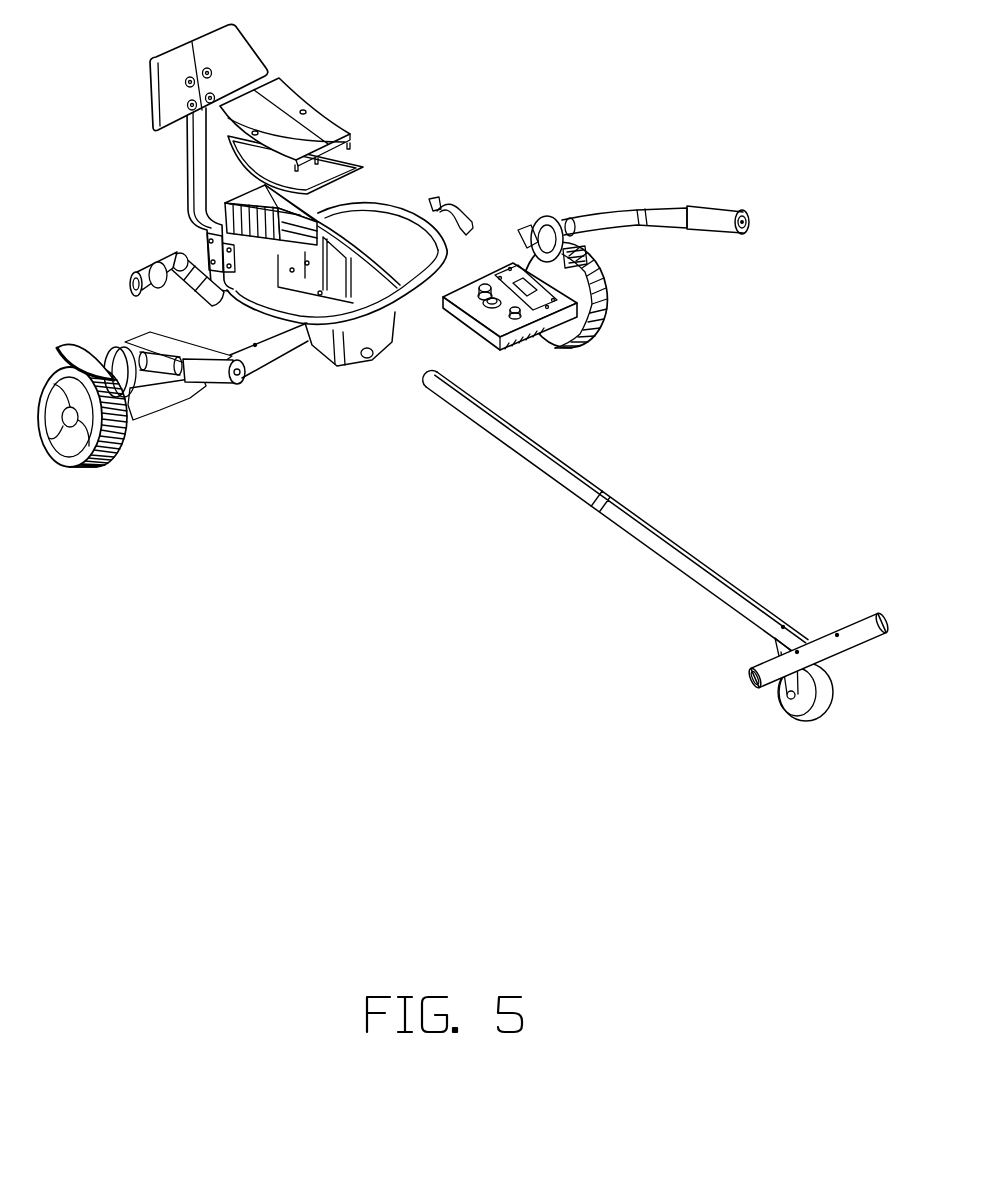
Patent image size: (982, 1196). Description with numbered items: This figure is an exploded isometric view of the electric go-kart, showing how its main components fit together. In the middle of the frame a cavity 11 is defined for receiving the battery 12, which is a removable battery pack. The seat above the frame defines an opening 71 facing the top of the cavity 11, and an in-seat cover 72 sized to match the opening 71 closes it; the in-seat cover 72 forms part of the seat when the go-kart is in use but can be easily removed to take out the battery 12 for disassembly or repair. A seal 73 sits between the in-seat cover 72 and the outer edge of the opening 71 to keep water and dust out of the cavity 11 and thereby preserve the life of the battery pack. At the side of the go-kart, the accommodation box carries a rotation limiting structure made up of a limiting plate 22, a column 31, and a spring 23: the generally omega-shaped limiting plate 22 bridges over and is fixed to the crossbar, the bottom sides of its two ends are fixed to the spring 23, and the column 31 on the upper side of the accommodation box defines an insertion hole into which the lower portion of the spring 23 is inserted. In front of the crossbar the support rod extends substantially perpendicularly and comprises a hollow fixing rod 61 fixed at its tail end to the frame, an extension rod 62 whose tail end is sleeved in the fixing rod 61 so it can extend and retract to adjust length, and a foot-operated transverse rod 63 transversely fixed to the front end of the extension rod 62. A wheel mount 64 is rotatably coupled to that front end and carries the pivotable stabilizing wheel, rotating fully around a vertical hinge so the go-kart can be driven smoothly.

The cavity 11 is at (365, 287).
The battery 12 is at (243, 232).
The limiting plate 22 is at (463, 213).
The spring 23 is at (475, 230).
The column 31 is at (522, 314).
The fixing rod 61 is at (503, 442).
The extension rod 62 is at (643, 537).
The transverse rod 63 is at (868, 627).
The wheel mount 64 is at (780, 653).
The opening 71 is at (362, 227).
The in-seat cover 72 is at (283, 100).
The seal 73 is at (347, 157).